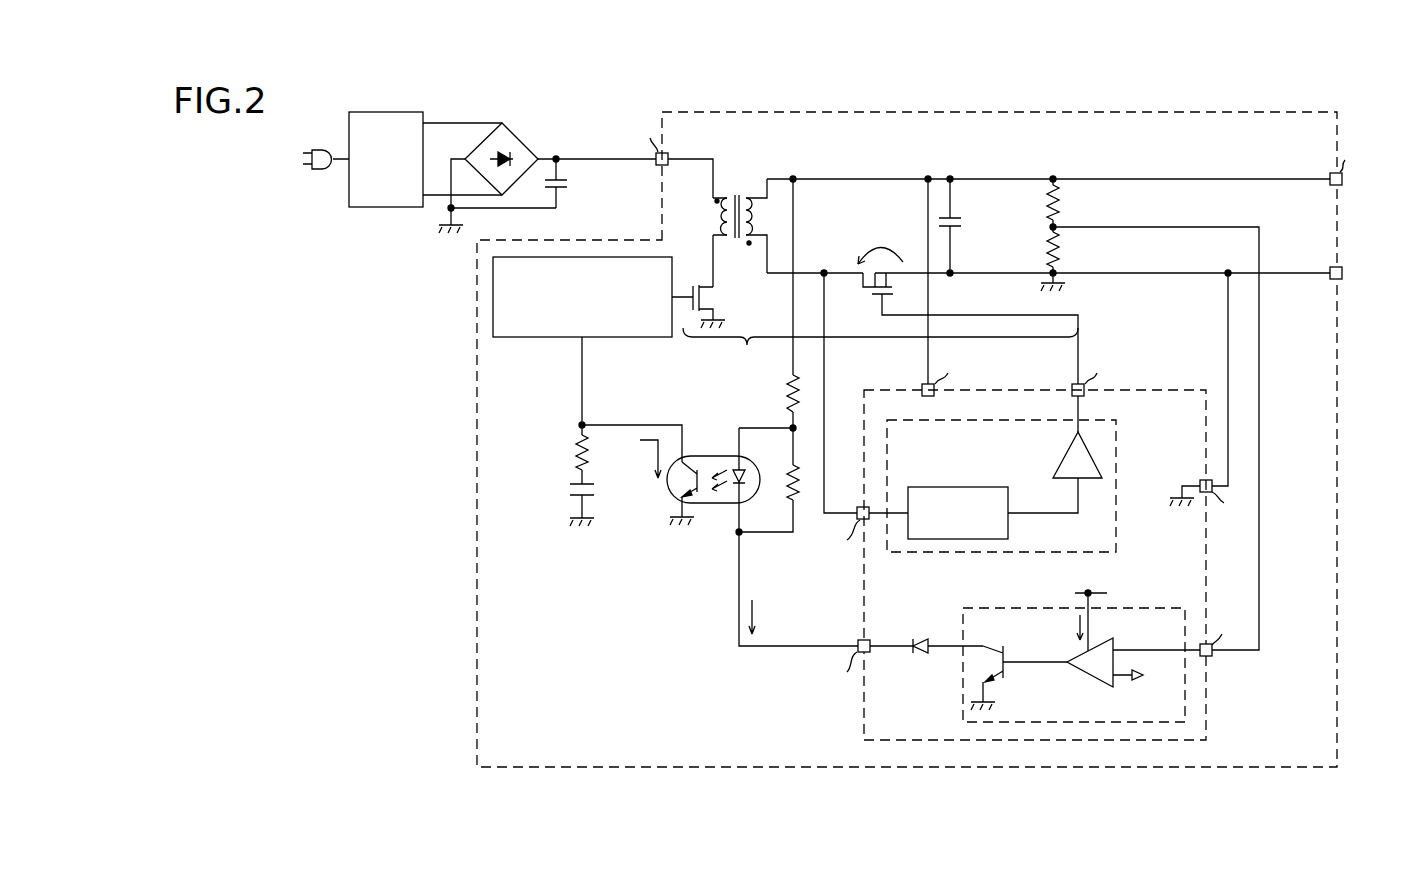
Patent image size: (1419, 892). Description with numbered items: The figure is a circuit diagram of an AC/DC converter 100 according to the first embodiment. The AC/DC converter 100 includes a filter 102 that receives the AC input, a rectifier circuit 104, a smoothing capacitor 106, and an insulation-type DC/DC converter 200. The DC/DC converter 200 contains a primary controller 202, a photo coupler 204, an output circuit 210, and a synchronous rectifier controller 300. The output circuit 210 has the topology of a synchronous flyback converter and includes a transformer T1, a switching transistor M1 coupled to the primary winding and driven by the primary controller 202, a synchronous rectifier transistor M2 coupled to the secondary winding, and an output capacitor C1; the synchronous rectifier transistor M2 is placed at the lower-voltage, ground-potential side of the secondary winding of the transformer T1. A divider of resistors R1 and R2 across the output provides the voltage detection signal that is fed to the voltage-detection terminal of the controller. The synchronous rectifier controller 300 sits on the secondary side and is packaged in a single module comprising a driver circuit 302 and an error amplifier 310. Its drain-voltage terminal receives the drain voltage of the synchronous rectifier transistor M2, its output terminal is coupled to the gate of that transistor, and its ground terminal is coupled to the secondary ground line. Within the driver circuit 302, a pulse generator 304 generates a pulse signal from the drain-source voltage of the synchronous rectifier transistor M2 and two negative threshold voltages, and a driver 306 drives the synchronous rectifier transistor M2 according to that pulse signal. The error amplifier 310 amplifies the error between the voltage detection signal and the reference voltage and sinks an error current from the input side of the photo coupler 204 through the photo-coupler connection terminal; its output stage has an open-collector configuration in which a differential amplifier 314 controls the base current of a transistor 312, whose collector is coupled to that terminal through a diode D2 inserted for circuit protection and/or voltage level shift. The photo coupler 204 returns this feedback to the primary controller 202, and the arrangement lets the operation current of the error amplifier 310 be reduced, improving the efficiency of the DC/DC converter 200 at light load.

The AC/DC converter 100 is at (836, 444).
The filter 102 is at (380, 112).
The rectifier circuit 104 is at (527, 112).
The smoothing capacitor 106 is at (572, 186).
The DC/DC converter 200 is at (1040, 112).
The primary controller 202 is at (533, 338).
The photo coupler 204 is at (716, 455).
The output circuit 210 is at (880, 349).
The synchronous rectifier controller 300 is at (862, 722).
The driver circuit 302 is at (1118, 452).
The pulse generator 304 is at (955, 487).
The driver 306 is at (1058, 452).
The error amplifier 310 is at (961, 712).
The transistor 312 is at (1012, 673).
The differential amplifier 314 is at (1083, 675).
The transformer T1 is at (734, 194).
The switching transistor M1 is at (718, 297).
The synchronous rectifier transistor M2 is at (862, 288).
The output capacitor C1 is at (968, 225).
The resistor R1 is at (1062, 203).
The resistor R2 is at (1062, 251).
The diode D2 is at (915, 638).